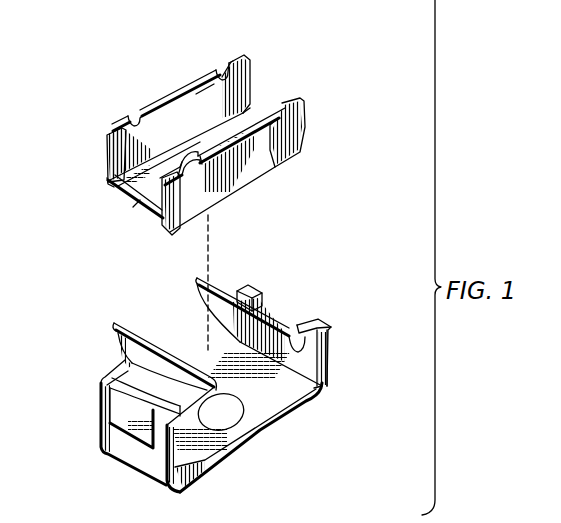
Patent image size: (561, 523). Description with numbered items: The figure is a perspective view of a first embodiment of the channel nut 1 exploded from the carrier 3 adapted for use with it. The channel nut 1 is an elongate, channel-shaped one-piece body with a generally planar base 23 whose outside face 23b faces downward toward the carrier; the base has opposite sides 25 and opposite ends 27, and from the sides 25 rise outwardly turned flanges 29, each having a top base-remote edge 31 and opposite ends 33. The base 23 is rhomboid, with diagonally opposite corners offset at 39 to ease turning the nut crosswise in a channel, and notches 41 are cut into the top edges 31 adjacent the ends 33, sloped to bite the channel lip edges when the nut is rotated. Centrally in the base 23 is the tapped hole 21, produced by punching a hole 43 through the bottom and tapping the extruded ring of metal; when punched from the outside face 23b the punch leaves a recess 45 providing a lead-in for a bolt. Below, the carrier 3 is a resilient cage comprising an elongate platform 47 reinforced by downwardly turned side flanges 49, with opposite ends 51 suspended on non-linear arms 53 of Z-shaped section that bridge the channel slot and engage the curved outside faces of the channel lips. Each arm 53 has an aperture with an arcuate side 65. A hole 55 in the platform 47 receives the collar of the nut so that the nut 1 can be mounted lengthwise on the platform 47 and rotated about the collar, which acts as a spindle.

The channel nut 1 is at (318, 77).
The carrier 3 is at (332, 330).
The tapped hole 21 is at (158, 171).
The base 23 is at (302, 96).
The outside face 23b is at (165, 124).
The opposite sides 25 is at (113, 186).
The opposite ends 27 is at (250, 113).
The flanges 29 is at (185, 120).
The top base-remote edge 31 is at (179, 176).
The opposite ends 33 is at (249, 62).
The offset corners 39 is at (103, 180).
The notches 41 is at (217, 76).
The punched hole 43 is at (194, 150).
The recess 45 is at (132, 519).
The platform 47 is at (328, 393).
The side flanges 49 is at (260, 447).
The opposite ends 51 is at (232, 347).
The non-linear arms 53 is at (300, 314).
The hole 55 is at (237, 422).
The arcuate side 65 is at (300, 312).